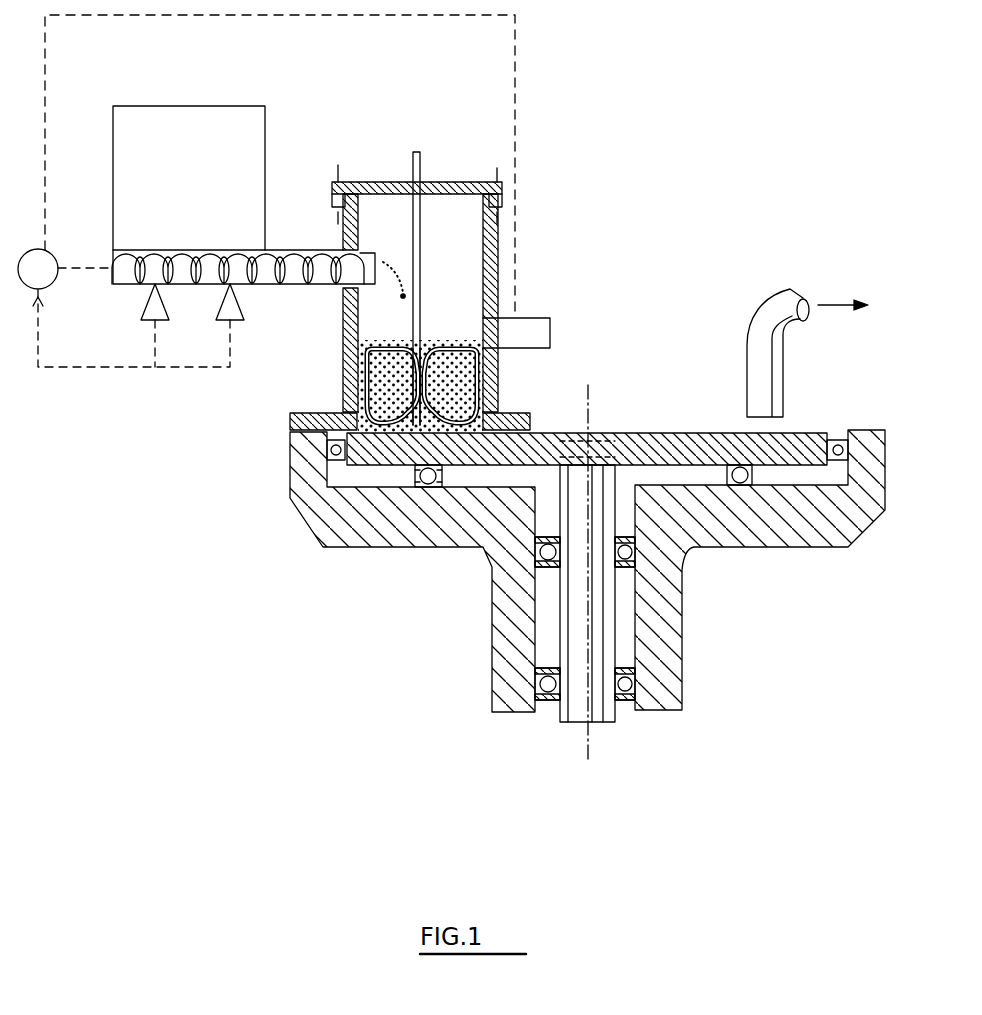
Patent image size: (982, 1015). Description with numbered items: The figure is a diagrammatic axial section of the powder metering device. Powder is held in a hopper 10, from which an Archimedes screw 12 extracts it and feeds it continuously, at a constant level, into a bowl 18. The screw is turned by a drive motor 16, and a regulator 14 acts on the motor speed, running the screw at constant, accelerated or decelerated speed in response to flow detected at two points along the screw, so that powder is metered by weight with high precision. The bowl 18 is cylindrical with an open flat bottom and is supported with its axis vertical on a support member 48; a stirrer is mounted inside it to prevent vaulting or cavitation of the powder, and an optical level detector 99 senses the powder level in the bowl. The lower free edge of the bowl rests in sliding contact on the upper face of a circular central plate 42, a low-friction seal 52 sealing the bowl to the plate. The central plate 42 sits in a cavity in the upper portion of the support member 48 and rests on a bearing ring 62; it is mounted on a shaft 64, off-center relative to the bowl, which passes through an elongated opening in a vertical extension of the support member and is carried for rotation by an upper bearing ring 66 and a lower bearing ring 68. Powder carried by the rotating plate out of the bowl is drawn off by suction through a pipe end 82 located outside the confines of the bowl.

The hopper 10 is at (198, 106).
The Archimedes screw 12 is at (174, 252).
The regulator 14 is at (186, 367).
The drive motor 16 is at (40, 250).
The bowl 18 is at (498, 260).
The optical level detector 99 is at (525, 328).
The seal 52 is at (515, 410).
The central plate 42 is at (673, 437).
The support member 48 is at (357, 515).
The bearing ring 62 is at (432, 487).
The shaft 64 is at (605, 640).
The upper bearing ring 66 is at (632, 550).
The lower bearing ring 68 is at (632, 685).
The pipe end 82 is at (768, 375).